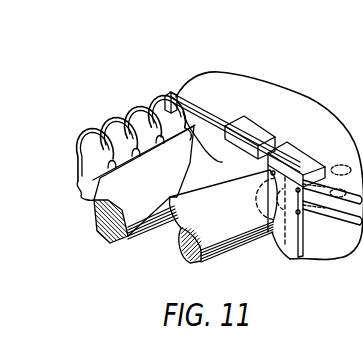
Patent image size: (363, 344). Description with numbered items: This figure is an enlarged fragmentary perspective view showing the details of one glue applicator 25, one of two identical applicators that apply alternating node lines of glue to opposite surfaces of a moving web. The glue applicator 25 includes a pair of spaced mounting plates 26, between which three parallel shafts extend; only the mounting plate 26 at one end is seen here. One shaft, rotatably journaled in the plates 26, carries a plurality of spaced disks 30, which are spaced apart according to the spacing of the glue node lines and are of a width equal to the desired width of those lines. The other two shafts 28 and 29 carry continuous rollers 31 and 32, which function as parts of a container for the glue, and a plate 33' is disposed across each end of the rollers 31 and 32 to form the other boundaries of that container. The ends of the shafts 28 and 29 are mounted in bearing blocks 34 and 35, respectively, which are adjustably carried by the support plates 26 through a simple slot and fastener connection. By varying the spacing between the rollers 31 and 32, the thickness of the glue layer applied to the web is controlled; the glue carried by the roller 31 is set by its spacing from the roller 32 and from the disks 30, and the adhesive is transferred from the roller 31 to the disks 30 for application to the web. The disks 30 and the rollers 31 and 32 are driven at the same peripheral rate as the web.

The glue applicator 25 is at (189, 70).
The mounting plate 26 is at (303, 100).
The shaft 28 is at (228, 163).
The shaft 29 is at (272, 238).
The disk 30 is at (80, 140).
The roller 31 is at (114, 247).
The roller 32 is at (178, 247).
The plate 33' is at (144, 180).
The bearing block 34 is at (247, 118).
The bearing block 35 is at (305, 160).